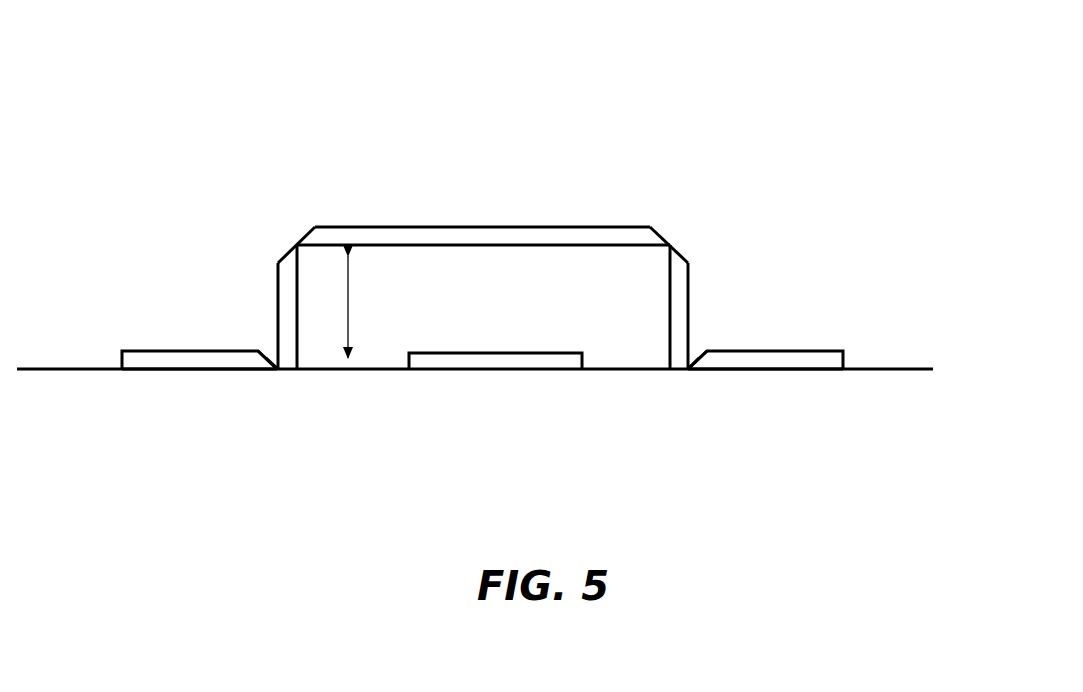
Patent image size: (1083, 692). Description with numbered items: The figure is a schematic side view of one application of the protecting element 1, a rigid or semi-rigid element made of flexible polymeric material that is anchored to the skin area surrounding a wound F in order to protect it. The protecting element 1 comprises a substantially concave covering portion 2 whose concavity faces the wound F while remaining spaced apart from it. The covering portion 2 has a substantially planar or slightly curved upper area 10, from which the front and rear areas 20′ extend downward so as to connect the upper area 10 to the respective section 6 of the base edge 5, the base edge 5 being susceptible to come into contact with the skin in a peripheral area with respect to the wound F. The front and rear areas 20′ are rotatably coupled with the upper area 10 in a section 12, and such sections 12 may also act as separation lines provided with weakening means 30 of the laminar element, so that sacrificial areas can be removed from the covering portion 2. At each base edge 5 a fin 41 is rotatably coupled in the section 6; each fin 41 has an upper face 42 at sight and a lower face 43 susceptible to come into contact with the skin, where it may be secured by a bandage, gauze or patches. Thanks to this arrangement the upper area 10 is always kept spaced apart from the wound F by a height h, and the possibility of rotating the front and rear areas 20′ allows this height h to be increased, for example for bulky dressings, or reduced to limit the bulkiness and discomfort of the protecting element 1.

The protecting element 1 is at (787, 83).
The covering portion 2 is at (408, 137).
The upper area 10 is at (497, 210).
The section 12 is at (295, 245).
The front and rear areas 20′ is at (248, 285).
The weakening means 30 is at (296, 226).
The fins 41 is at (108, 332).
The upper face 42 is at (143, 348).
The lower face 43 is at (167, 370).
The base edge 5 is at (267, 373).
The section 6 is at (277, 370).
The wound F is at (512, 360).
The height h is at (358, 307).